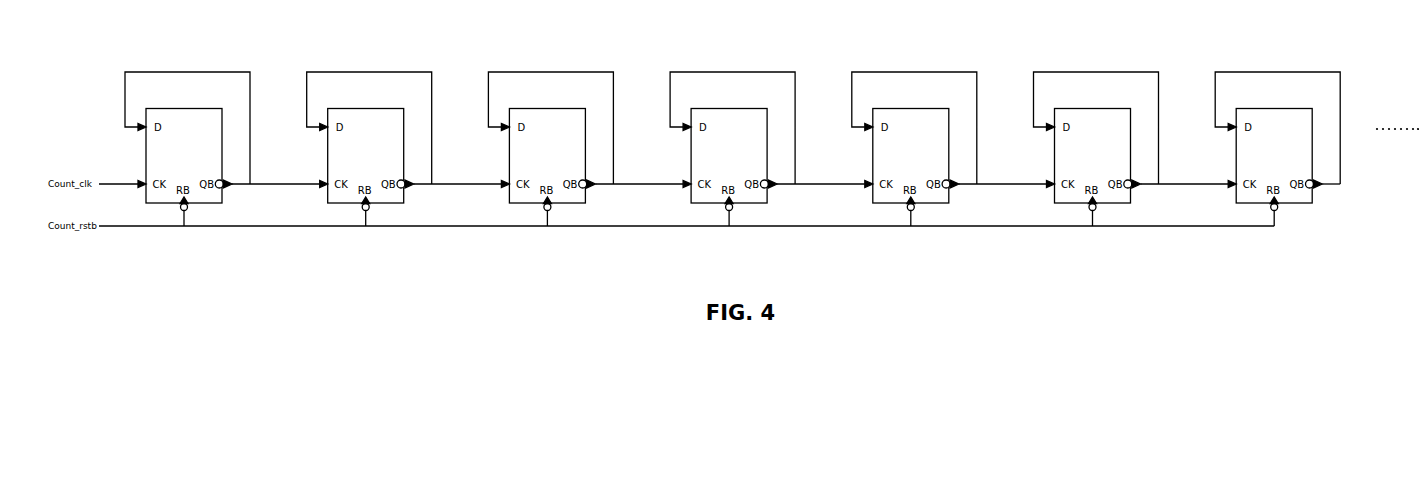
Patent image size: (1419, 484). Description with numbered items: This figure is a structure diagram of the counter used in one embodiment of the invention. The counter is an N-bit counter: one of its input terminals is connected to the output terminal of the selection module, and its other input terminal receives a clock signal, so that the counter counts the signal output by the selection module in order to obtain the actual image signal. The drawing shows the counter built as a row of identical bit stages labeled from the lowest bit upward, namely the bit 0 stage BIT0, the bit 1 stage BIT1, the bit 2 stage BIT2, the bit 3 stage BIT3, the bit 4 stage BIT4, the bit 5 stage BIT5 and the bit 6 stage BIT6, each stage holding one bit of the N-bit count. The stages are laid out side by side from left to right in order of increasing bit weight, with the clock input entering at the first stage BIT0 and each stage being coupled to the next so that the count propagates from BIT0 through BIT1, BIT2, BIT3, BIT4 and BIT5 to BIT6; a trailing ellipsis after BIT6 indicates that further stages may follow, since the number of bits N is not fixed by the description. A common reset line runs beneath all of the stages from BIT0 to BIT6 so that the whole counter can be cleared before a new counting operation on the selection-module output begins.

The flip-flop stage BIT0 is at (187, 135).
The flip-flop stage BIT1 is at (369, 135).
The flip-flop stage BIT2 is at (550, 135).
The flip-flop stage BIT3 is at (732, 135).
The flip-flop stage BIT4 is at (914, 135).
The flip-flop stage BIT5 is at (1096, 135).
The flip-flop stage BIT6 is at (1277, 135).
The flip-flop stage BIT0 0 is at (187, 135).
The flip-flop stage BIT1 1 is at (369, 135).
The flip-flop stage BIT2 2 is at (550, 135).
The flip-flop stage BIT3 3 is at (732, 135).
The flip-flop stage BIT4 4 is at (914, 135).
The flip-flop stage BIT5 5 is at (1096, 135).
The flip-flop stage BIT6 6 is at (1277, 135).